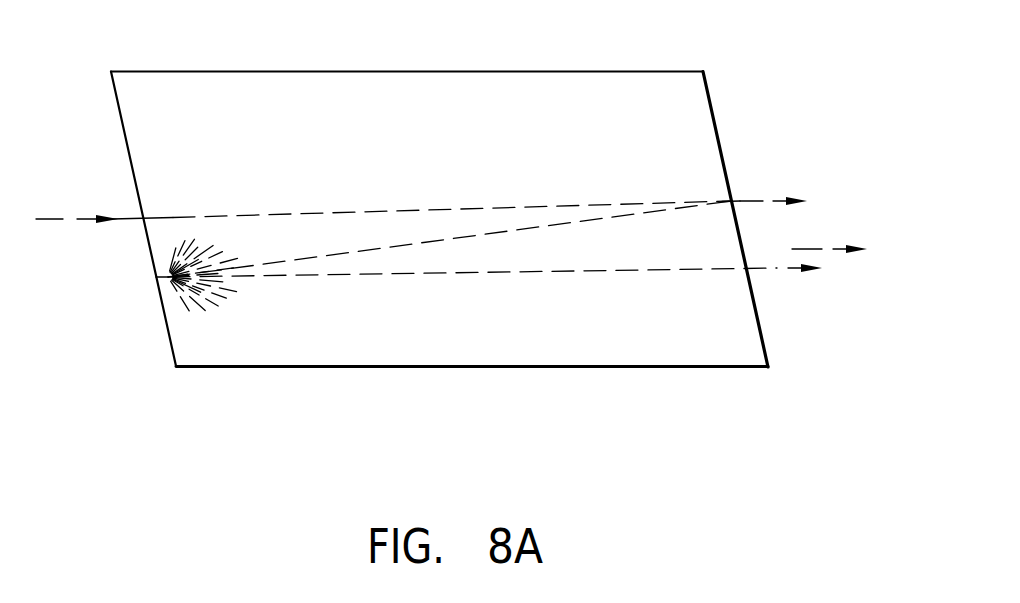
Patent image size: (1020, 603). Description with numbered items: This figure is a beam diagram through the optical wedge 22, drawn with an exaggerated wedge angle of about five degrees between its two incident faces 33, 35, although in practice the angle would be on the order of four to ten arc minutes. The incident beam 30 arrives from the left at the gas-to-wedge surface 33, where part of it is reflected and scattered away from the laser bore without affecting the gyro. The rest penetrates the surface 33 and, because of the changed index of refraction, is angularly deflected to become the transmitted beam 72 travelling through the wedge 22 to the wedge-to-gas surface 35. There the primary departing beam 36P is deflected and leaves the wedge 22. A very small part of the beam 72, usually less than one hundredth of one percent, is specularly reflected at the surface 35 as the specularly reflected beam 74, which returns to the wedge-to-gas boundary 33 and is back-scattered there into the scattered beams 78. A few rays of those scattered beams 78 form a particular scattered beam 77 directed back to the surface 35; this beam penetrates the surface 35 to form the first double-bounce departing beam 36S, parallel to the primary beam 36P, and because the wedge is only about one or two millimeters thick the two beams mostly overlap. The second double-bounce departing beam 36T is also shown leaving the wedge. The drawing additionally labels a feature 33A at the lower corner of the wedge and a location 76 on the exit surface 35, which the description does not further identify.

The optical wedge 22 is at (578, 64).
The gas-to-wedge surface 33 is at (128, 157).
The bottom edge of plate 33A is at (173, 370).
The wedge-to-gas surface 35 is at (717, 110).
The incident beam 30 is at (127, 222).
The transmitted beam 72 is at (477, 208).
The specularly reflected beam 74 is at (363, 248).
The particular scattered beam 77 is at (647, 272).
The exit point on exit face 76 is at (727, 197).
The scattered beams 78 is at (220, 293).
The primary departing beam 36P is at (748, 201).
The second double-bounce departing beam 36T is at (816, 250).
The first double-bounce departing beam 36S is at (765, 268).